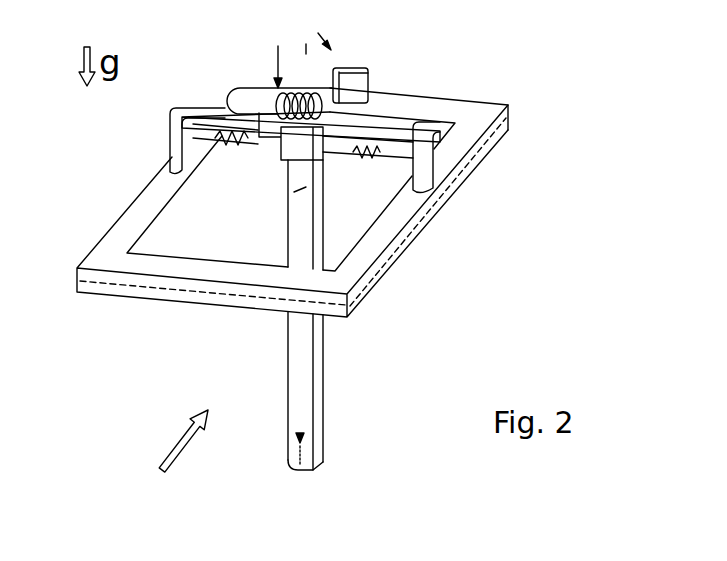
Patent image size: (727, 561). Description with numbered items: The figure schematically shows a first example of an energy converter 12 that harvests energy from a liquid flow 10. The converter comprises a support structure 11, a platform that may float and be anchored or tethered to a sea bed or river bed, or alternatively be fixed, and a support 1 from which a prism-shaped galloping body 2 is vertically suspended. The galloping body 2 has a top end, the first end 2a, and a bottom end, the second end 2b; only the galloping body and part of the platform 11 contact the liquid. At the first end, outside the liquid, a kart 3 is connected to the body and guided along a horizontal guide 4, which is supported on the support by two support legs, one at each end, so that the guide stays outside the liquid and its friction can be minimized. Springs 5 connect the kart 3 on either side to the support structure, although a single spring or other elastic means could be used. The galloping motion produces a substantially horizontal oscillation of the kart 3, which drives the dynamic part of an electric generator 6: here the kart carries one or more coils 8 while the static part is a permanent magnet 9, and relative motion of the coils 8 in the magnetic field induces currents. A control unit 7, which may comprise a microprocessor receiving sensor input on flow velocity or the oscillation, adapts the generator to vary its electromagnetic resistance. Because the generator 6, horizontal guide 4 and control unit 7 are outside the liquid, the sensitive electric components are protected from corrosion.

The support 1 is at (76, 268).
The galloping body 2 is at (321, 391).
The first end 2a is at (336, 479).
The second end 2b is at (328, 215).
The kart 3 is at (291, 135).
The horizontal guide 4 is at (424, 100).
The springs 5 is at (243, 131).
The generator 6 is at (278, 47).
The control unit 7 is at (341, 63).
The coils 8 is at (299, 87).
The permanent magnet 9 is at (279, 82).
The incident liquid flow 10 is at (162, 465).
The support structure / platform 11 is at (398, 253).
The energy converter 12 is at (540, 78).